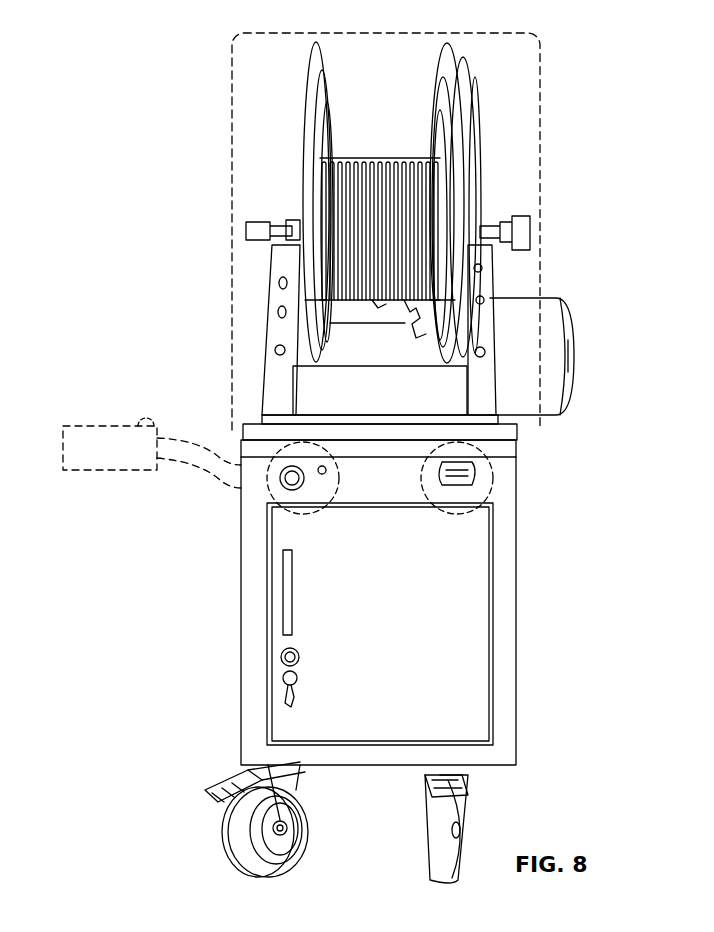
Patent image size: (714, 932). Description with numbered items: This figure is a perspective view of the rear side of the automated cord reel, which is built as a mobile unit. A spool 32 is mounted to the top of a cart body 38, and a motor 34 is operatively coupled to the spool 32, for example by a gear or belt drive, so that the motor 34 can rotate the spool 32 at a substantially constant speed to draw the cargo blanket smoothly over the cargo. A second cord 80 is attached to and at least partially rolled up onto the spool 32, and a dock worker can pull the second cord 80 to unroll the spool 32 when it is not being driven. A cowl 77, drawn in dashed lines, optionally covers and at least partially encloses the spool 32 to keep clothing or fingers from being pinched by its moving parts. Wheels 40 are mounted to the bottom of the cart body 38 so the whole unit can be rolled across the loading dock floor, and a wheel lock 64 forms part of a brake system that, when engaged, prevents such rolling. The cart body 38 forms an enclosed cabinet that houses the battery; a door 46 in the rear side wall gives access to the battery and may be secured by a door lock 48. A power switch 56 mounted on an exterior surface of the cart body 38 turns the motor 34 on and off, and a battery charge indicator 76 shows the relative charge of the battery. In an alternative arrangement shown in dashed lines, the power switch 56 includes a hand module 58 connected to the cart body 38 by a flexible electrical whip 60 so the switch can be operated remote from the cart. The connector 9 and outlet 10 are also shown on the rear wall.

The electrical connector 9 is at (270, 480).
The outlet 10 is at (497, 473).
The spool 32 is at (482, 107).
The motor 34 is at (560, 300).
The cart body 38 is at (515, 602).
The wheels 40 is at (280, 866).
The door 46 is at (452, 688).
The door lock 48 is at (282, 657).
The power switch 56 is at (144, 424).
The hand module 58 is at (78, 426).
The electrical whip 60 is at (215, 460).
The wheel lock 64 is at (212, 793).
The battery charge indicator 76 is at (495, 468).
The cowl 77 is at (232, 140).
The second cord 80 is at (415, 200).